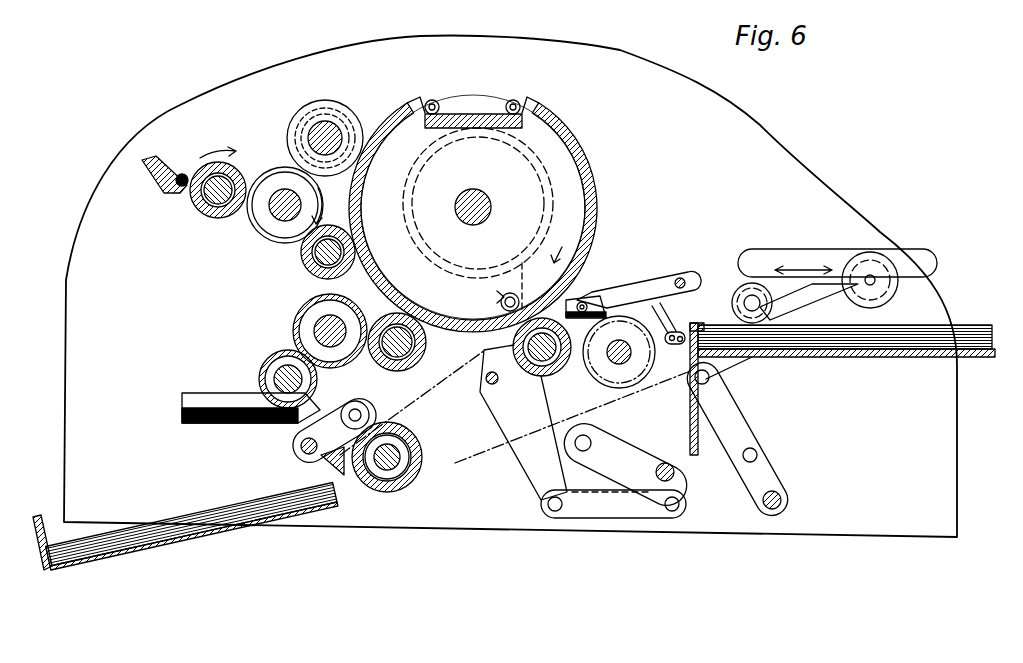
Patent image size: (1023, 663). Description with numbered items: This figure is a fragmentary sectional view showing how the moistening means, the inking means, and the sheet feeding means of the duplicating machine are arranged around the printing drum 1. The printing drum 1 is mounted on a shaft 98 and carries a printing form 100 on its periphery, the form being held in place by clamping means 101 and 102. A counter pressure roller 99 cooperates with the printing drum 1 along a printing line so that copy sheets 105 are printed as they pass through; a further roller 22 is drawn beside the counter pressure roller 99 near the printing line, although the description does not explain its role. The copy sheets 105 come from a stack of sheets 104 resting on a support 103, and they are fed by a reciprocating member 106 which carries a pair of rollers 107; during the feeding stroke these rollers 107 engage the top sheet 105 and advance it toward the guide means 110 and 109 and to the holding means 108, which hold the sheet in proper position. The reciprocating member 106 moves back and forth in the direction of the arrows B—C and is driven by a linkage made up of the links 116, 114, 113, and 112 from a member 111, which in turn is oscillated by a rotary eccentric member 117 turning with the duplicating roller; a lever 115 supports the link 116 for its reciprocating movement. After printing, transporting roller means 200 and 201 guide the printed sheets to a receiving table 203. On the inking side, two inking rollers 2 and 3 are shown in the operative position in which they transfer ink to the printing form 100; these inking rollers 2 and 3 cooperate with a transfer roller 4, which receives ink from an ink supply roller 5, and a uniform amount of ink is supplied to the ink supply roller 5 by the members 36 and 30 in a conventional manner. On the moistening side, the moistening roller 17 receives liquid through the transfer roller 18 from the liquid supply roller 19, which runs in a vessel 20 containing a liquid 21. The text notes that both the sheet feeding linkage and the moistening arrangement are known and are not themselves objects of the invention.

The printing drum 1 is at (581, 165).
The inking roller 2 is at (328, 123).
The inking roller 3 is at (301, 260).
The transfer roller 4 is at (266, 170).
The ink supply roller 5 is at (196, 208).
The moistening roller 17 is at (383, 313).
The transfer roller 18 is at (294, 320).
The liquid supply roller 19 is at (264, 372).
The vessel 20 is at (198, 400).
The liquid 21 is at (188, 410).
The transfer roller 22 is at (627, 338).
The ink supply member 30 is at (145, 165).
The ink supply member 36 is at (182, 174).
The shaft 98 is at (470, 197).
The counter pressure roller 99 is at (548, 368).
The printing form 100 is at (557, 124).
The clamping means 101 is at (515, 100).
The clamping means 102 is at (432, 100).
The support 103 is at (983, 363).
The stack of sheets 104 is at (970, 338).
The copy sheet 105 is at (712, 320).
The reciprocating member 106 is at (842, 255).
The rollers 107 is at (757, 300).
The holding means 108 is at (588, 298).
The guide means 109 is at (684, 322).
The guide means 110 is at (661, 277).
The member 111 is at (497, 296).
The link 112 is at (503, 413).
The link 113 is at (617, 512).
The link 114 is at (648, 474).
The lever 115 is at (757, 482).
The link 116 is at (752, 358).
The rotary eccentric member 117 is at (487, 196).
The transporting roller means 200 is at (422, 450).
The transporting roller means 201 is at (349, 403).
The receiving table 203 is at (172, 540).